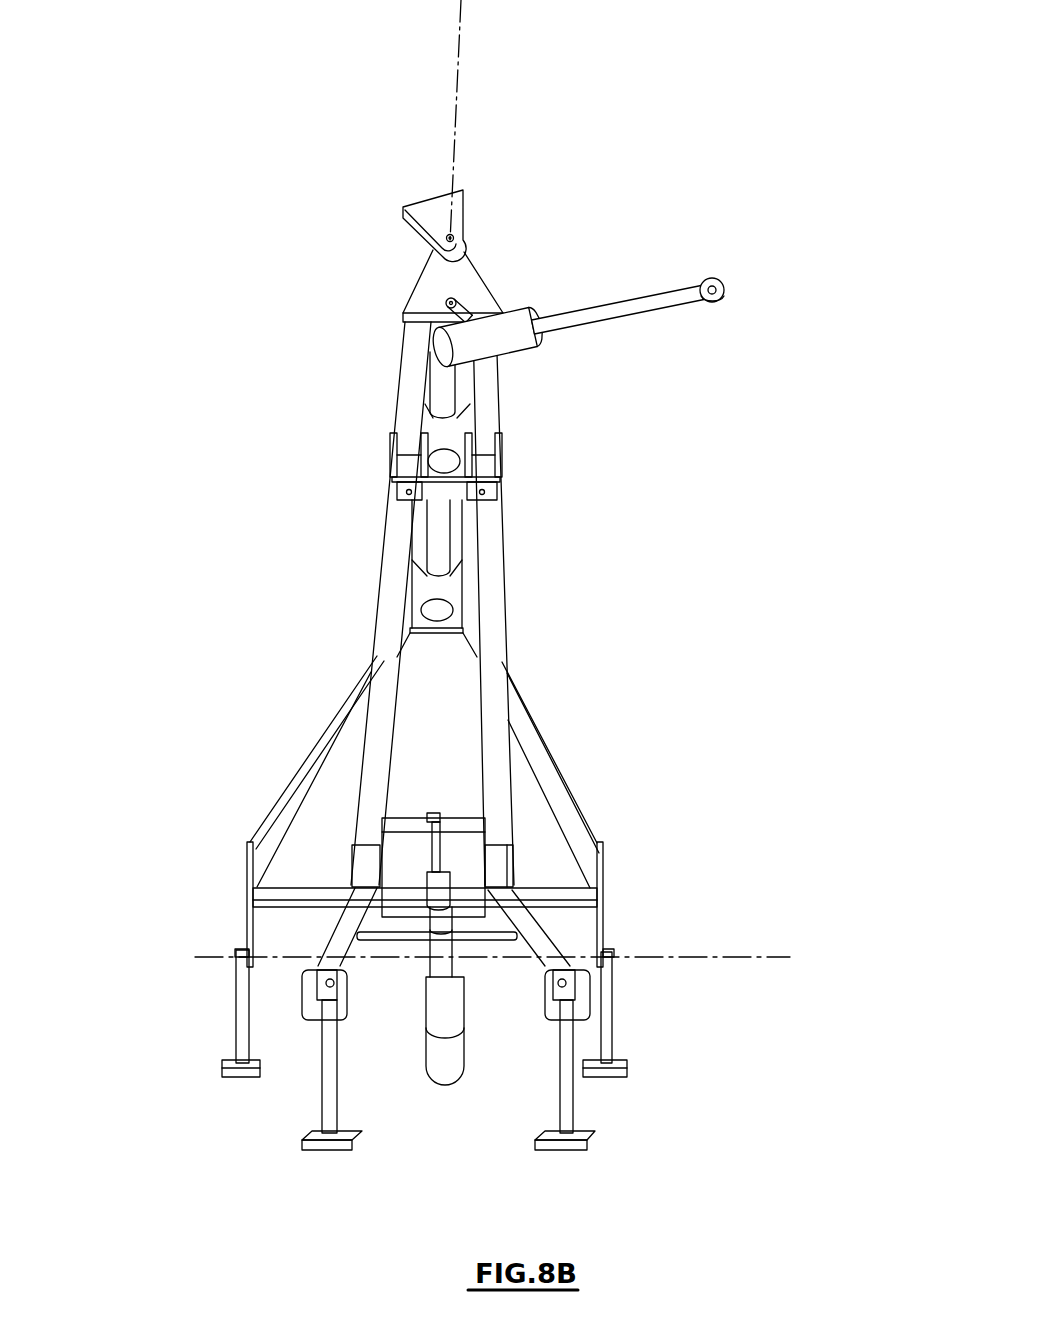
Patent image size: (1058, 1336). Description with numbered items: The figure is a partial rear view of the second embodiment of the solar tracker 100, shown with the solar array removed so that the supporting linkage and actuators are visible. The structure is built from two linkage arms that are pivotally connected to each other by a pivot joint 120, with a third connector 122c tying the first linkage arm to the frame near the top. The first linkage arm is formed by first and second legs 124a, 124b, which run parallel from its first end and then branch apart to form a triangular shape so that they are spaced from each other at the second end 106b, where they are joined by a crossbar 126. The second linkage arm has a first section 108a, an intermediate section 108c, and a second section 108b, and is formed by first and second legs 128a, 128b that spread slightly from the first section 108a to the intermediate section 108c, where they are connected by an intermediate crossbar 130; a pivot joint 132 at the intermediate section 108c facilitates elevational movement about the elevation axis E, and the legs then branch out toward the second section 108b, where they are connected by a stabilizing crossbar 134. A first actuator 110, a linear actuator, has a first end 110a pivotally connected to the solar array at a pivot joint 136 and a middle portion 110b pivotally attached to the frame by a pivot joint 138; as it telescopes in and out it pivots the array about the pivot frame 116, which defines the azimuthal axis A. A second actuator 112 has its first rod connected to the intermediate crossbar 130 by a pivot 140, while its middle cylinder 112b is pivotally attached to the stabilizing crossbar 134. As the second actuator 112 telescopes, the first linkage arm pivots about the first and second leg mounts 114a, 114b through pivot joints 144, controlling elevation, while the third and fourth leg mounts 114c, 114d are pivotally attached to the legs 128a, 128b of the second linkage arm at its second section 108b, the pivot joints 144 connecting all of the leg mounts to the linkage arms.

The solar tracker 100 is at (750, 130).
The second end of first linkage arm 106b is at (568, 813).
The first section of second linkage arm 108a is at (535, 604).
The second section of second linkage arm 108b is at (343, 953).
The intermediate section of second linkage arm 108c is at (505, 898).
The first actuator 110 is at (568, 340).
The first end of first actuator 110a is at (503, 343).
The middle portion of first actuator 110b is at (619, 294).
The second actuator 112 is at (425, 1015).
The middle cylinder of second actuator 112b is at (438, 952).
The first leg mount 114a is at (608, 983).
The second leg mount 114b is at (235, 1007).
The third leg mount 114c is at (570, 1118).
The fourth leg mount 114d is at (325, 1083).
The pivot frame 116 is at (445, 372).
The pivot joint 120 is at (388, 435).
The third connector 122c is at (473, 278).
The first leg of first linkage arm 124a is at (527, 707).
The second leg of first linkage arm 124b is at (343, 700).
The crossbar 126 is at (407, 841).
The first leg of second linkage arm 128a is at (485, 642).
The second leg of second linkage arm 128b is at (395, 593).
The intermediate crossbar 130 is at (400, 822).
The pivot joint 132 is at (285, 897).
The stabilizing crossbar 134 is at (473, 947).
The pivot joint 136 is at (453, 238).
The pivot joint 138 is at (710, 280).
The pivot 140 is at (432, 815).
The pivot joints 144 is at (237, 953).
The azimuthal axis A is at (462, 12).
The elevation axis E is at (758, 957).